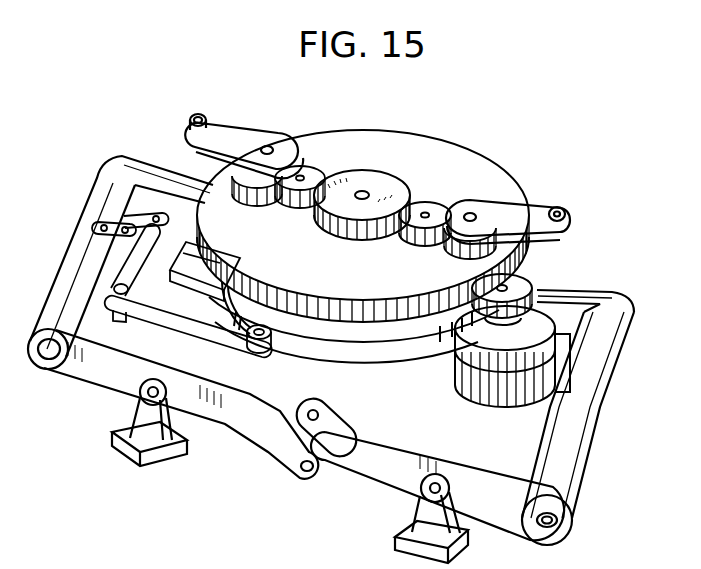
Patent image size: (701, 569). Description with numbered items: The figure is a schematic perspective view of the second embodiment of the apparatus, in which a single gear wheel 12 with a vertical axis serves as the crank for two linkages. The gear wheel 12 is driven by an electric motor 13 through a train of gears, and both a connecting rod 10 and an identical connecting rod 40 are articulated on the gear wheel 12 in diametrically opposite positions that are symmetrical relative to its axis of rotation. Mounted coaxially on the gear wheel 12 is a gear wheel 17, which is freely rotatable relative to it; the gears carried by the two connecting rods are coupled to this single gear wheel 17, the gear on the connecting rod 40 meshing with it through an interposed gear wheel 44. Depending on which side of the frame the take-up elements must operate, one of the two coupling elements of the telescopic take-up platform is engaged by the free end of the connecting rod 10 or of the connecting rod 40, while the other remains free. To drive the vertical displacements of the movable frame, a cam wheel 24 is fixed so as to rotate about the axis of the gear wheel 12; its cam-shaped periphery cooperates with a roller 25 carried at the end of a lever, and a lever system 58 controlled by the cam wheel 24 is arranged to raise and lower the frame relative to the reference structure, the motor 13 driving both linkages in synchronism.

The connecting rod 10 is at (232, 136).
The gear wheel 12 is at (443, 163).
The electric motor 13 is at (533, 383).
The gear wheel 17 is at (365, 190).
The cam wheel 24 is at (393, 347).
The roller 25 is at (266, 356).
The connecting rod 40 is at (523, 217).
The gear wheel 44 is at (428, 203).
The lever system 58 is at (274, 492).